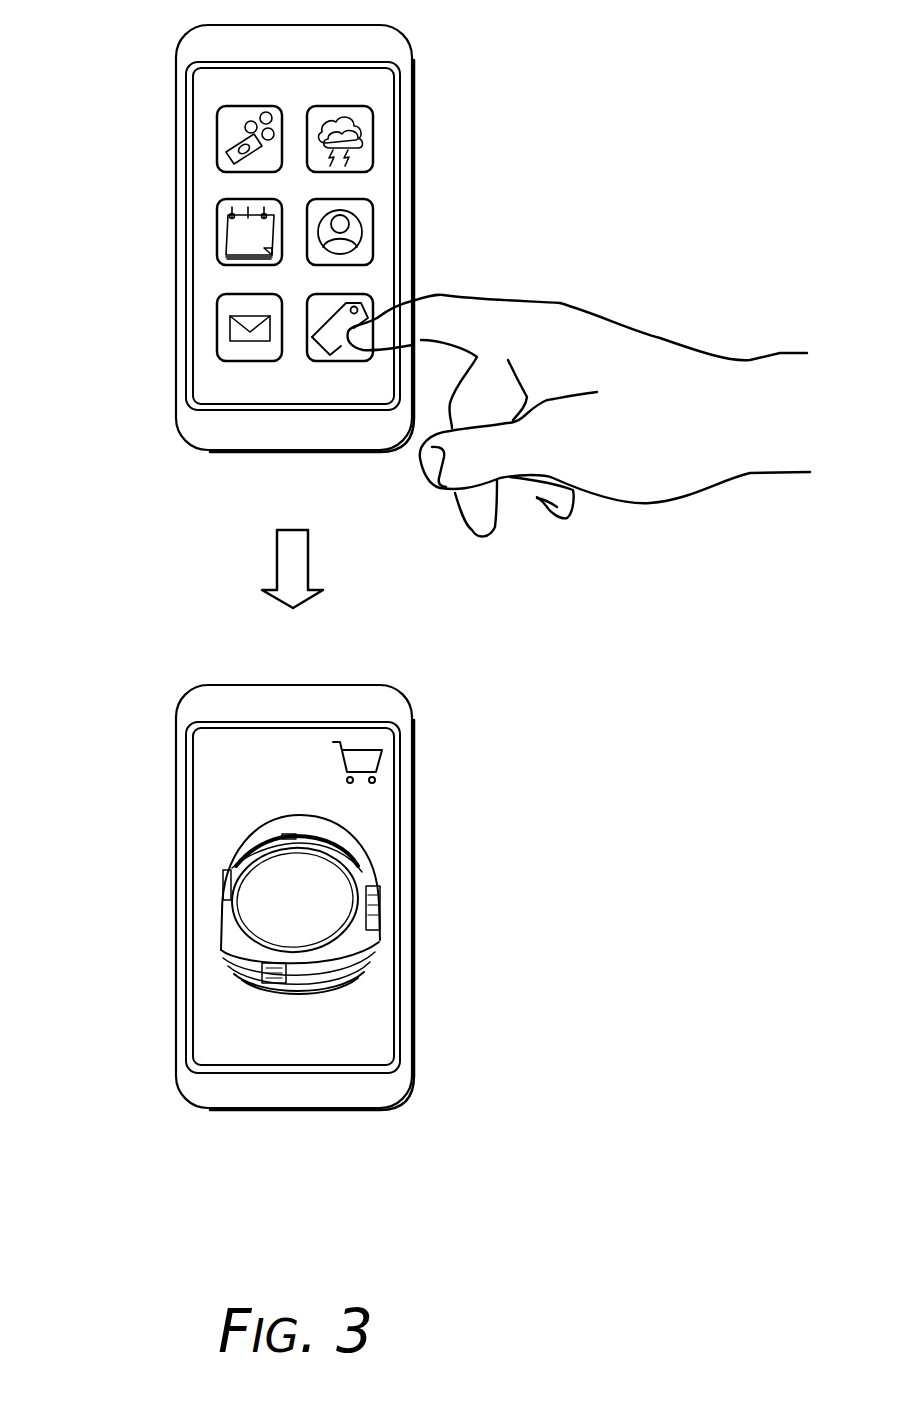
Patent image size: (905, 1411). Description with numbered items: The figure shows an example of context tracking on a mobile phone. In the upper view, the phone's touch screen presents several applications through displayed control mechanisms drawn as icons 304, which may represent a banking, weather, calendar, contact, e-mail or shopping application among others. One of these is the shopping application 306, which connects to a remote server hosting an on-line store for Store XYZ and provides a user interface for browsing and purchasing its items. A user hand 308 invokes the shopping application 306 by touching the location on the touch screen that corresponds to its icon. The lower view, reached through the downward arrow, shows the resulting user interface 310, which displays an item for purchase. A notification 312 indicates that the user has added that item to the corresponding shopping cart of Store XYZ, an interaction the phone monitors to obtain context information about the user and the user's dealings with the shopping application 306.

The icons 304 is at (208, 186).
The shopping application 306 is at (378, 293).
The user hand 308 is at (660, 338).
The user interface 310 is at (222, 793).
The notification 312 is at (381, 1024).